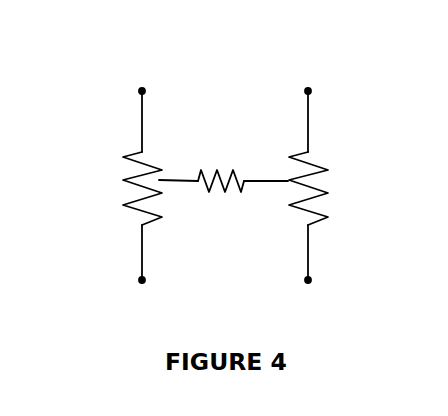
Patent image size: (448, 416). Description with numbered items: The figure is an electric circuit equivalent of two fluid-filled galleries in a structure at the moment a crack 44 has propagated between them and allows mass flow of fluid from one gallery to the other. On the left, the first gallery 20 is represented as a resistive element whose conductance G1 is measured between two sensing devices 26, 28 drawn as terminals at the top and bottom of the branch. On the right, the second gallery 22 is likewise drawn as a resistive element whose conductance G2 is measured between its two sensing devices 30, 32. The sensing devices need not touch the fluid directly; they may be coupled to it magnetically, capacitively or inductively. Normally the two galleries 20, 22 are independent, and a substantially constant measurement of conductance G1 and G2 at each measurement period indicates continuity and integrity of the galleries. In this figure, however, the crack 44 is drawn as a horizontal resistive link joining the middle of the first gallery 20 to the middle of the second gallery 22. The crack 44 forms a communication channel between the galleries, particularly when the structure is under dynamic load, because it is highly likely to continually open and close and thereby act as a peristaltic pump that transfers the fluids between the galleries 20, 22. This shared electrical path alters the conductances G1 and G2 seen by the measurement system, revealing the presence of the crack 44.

The first gallery 20 is at (89, 182).
The gallery 22 is at (366, 177).
The sensing device 26 is at (142, 91).
The sensing device 28 is at (142, 280).
The sensing device 30 is at (308, 91).
The sensing device 32 is at (308, 280).
The crack 44 is at (231, 243).
The conductance G1 is at (128, 205).
The conductance G2 is at (325, 195).